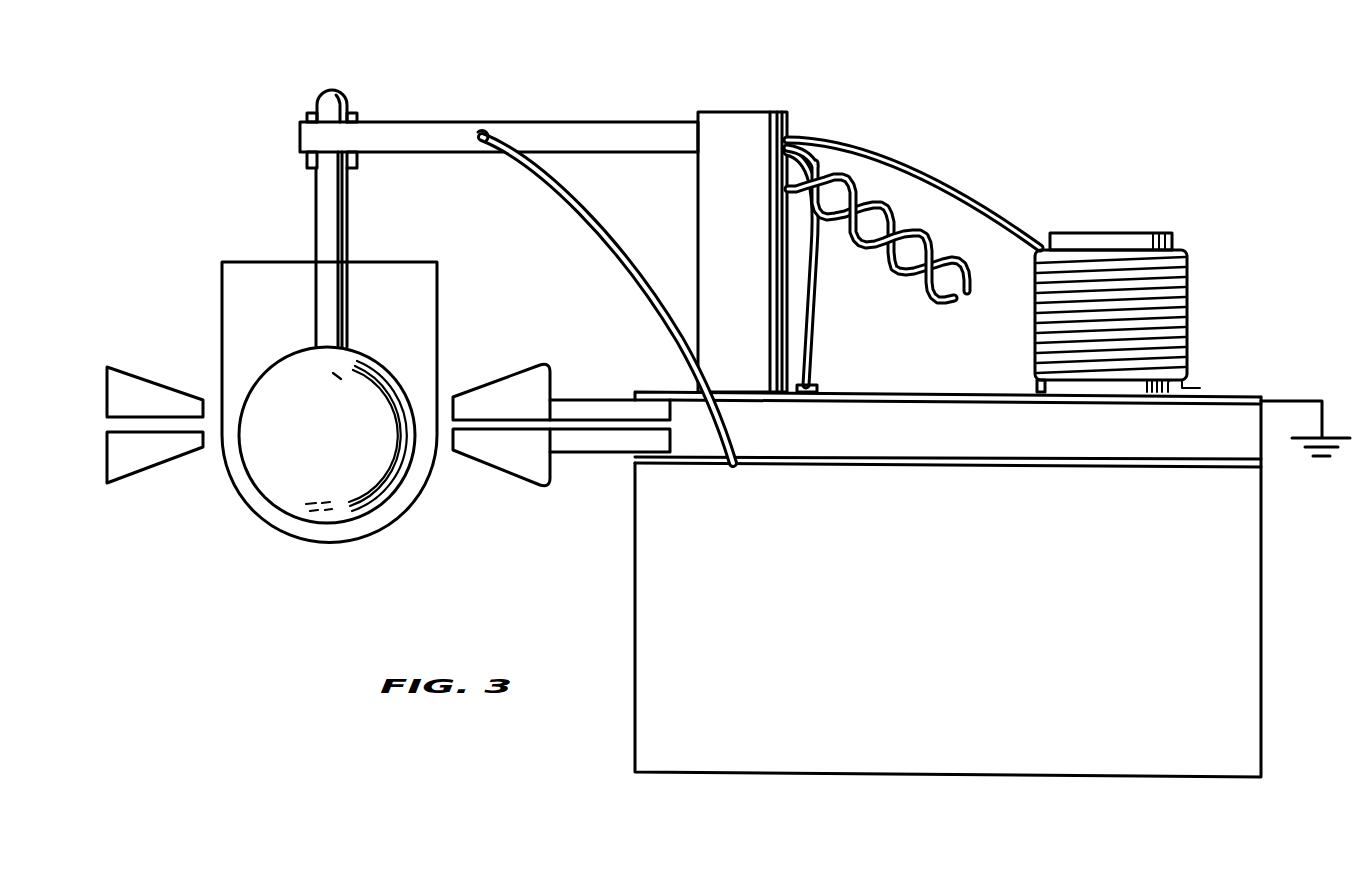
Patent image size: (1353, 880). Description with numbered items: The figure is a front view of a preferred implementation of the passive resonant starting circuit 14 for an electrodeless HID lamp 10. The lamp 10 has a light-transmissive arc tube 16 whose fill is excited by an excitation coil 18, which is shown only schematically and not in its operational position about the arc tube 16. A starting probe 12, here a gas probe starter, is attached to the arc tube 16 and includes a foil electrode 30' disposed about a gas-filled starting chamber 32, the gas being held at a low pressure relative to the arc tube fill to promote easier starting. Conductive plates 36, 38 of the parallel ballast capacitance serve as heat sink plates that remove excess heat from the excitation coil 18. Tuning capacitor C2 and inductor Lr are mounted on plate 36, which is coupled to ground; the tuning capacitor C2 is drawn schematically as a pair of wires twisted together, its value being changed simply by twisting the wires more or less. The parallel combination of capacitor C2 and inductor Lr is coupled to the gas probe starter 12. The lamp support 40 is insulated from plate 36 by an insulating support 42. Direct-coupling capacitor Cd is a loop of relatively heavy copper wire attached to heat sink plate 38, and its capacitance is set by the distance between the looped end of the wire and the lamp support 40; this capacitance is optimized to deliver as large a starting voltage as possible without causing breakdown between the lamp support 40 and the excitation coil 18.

The electrodeless HID lamp 10 is at (221, 518).
The starting probe 12 is at (250, 183).
The starting circuit 14 is at (882, 138).
The arc tube 16 is at (284, 516).
The excitation coil 18 is at (170, 377).
The foil electrode 30' is at (354, 123).
The starting chamber 32 is at (314, 258).
The conductive plate 36 is at (1262, 397).
The conductive plate 38 is at (1262, 466).
The lamp support 40 is at (567, 122).
The insulating support 42 is at (605, 296).
The direct-coupling capacitor Cd is at (491, 142).
The tuning capacitor C2 is at (880, 264).
The inductor Lr is at (1214, 272).